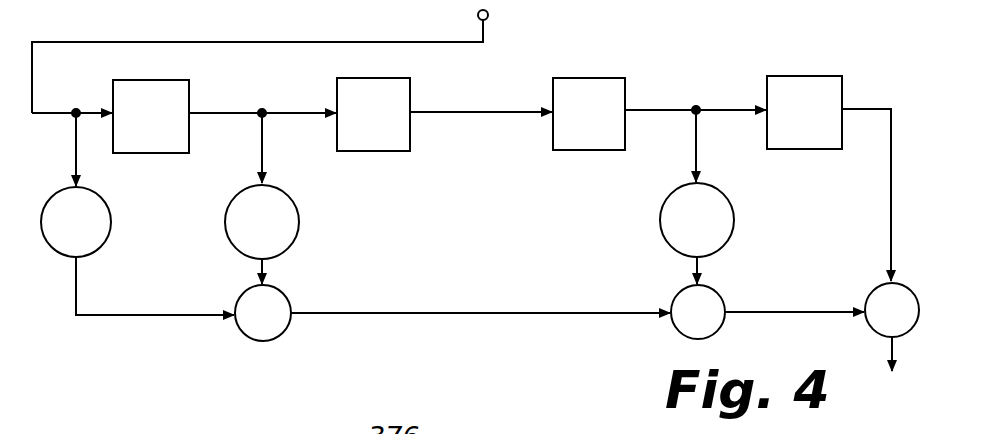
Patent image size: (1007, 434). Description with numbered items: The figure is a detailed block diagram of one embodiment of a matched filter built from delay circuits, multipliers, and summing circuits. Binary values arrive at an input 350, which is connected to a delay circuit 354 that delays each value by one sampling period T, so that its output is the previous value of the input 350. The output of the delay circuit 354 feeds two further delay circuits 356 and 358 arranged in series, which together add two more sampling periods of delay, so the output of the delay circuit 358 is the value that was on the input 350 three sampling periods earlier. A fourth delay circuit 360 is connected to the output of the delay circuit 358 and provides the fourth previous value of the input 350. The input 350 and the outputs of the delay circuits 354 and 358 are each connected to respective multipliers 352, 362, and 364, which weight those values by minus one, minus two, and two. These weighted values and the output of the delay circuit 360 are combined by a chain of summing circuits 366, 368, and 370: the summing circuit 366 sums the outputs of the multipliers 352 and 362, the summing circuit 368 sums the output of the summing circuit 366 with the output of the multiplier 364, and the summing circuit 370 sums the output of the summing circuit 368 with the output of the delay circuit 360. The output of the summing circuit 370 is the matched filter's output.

The input 350 is at (497, 6).
The multiplier 352 is at (105, 200).
The delay circuit 354 is at (189, 82).
The delay circuit 356 is at (410, 80).
The delay circuit 358 is at (625, 80).
The fourth delay circuit 360 is at (842, 80).
The multiplier 362 is at (295, 205).
The multiplier 364 is at (730, 203).
The summing circuit 366 is at (286, 294).
The summing circuit 368 is at (718, 292).
The summing circuit 370 is at (868, 292).